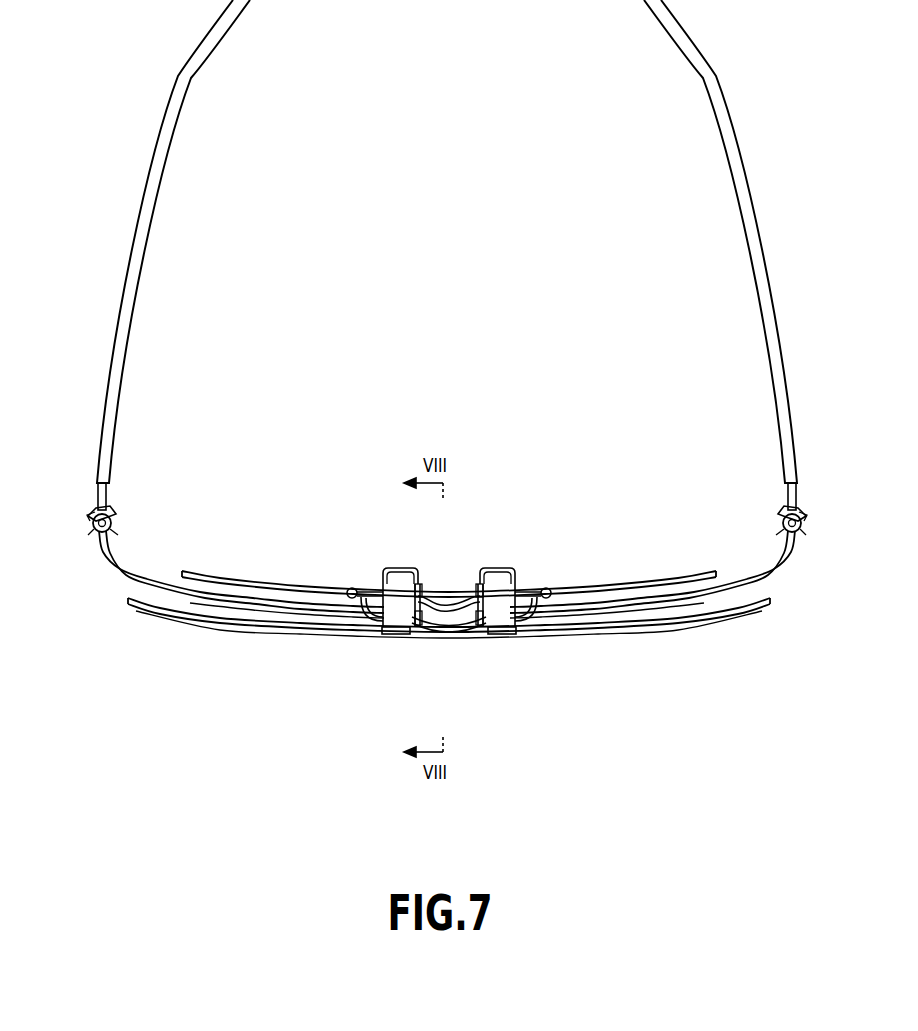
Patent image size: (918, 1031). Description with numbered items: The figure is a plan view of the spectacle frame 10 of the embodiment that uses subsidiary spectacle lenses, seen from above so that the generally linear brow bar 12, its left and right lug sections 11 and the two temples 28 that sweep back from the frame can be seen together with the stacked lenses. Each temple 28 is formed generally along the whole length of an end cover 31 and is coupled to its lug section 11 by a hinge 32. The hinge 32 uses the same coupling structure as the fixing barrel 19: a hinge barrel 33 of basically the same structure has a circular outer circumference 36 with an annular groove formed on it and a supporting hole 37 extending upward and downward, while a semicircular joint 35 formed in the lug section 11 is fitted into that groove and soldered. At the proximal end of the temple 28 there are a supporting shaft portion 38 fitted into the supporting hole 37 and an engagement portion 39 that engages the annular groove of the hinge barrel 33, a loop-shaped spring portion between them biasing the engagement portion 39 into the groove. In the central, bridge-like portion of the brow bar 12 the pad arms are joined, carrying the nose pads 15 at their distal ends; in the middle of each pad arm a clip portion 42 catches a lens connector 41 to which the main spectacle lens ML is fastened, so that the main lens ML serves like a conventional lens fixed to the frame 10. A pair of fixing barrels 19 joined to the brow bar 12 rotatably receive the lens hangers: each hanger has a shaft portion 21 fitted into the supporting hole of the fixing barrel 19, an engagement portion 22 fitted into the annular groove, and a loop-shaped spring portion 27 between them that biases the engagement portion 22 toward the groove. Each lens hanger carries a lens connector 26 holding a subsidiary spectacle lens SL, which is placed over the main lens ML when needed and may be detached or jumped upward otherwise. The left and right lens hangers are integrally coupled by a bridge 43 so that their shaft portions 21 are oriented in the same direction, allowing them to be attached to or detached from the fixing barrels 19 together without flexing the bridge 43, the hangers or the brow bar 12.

The spectacle frame 10 is at (143, 732).
The lug section 11 is at (108, 577).
The brow bar 12 is at (469, 583).
The nose pad 15 is at (512, 584).
The fixing barrel 19 is at (548, 594).
The shaft portion 21 is at (427, 571).
The engagement portion 22 is at (366, 596).
The lens connector 26 is at (483, 572).
The spring portion 27 is at (528, 600).
The temple 28 is at (790, 506).
The end cover 31 is at (718, 85).
The hinge 32 is at (800, 544).
The hinge barrel 33 is at (114, 512).
The semicircular joint 35 is at (93, 527).
The outer circumference 36 is at (114, 530).
The supporting hole 37 is at (94, 514).
The supporting shaft portion 38 is at (801, 517).
The engagement portion 39 is at (781, 521).
The lens connector 41 is at (394, 636).
The clip portion 42 is at (420, 605).
The bridge 43 is at (450, 634).
The main spectacle lens ML is at (190, 570).
The subsidiary spectacle lens SL is at (770, 604).